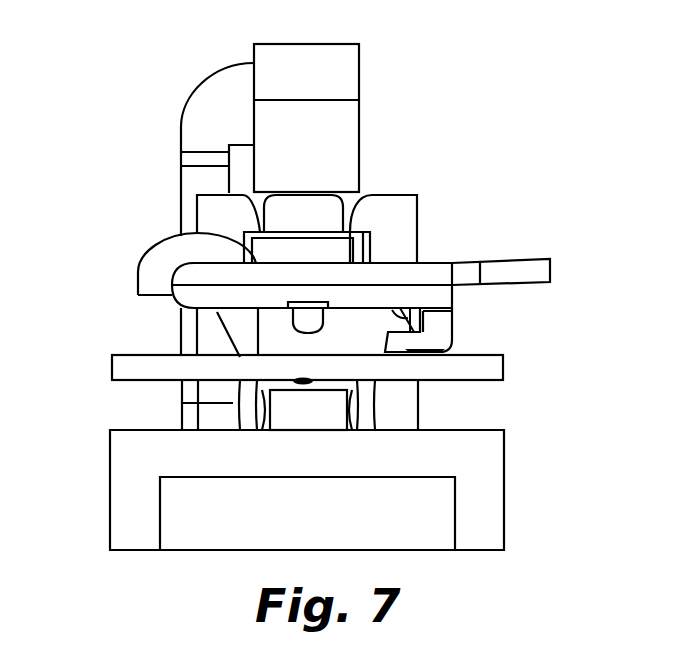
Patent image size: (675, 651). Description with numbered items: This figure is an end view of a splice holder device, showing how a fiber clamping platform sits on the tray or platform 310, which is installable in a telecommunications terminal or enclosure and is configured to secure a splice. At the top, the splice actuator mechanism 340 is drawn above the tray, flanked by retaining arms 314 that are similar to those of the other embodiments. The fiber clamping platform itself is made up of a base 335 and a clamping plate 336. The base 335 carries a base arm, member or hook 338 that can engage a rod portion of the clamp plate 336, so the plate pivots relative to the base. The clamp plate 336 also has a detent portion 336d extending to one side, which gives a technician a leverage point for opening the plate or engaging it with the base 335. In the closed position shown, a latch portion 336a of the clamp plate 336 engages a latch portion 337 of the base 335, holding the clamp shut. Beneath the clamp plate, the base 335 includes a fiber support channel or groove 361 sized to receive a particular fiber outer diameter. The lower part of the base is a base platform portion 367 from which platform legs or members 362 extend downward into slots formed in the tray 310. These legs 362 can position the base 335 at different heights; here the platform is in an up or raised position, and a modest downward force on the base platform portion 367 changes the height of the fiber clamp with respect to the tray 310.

The splice actuator mechanism 340 is at (360, 67).
The retaining arms 314 is at (397, 202).
The base arm, member or hook 338 is at (160, 258).
The clamping plate 336 is at (435, 270).
The detent portion 336d is at (515, 268).
The latch portion of base 337 is at (398, 318).
The fiber support channel/groove 361 is at (305, 327).
The latch portion of clamp plate 336a is at (442, 338).
The base platform portion 367 is at (120, 365).
The base 335 is at (360, 342).
The platform legs or members 362 is at (248, 412).
The tray or platform 310 is at (483, 484).